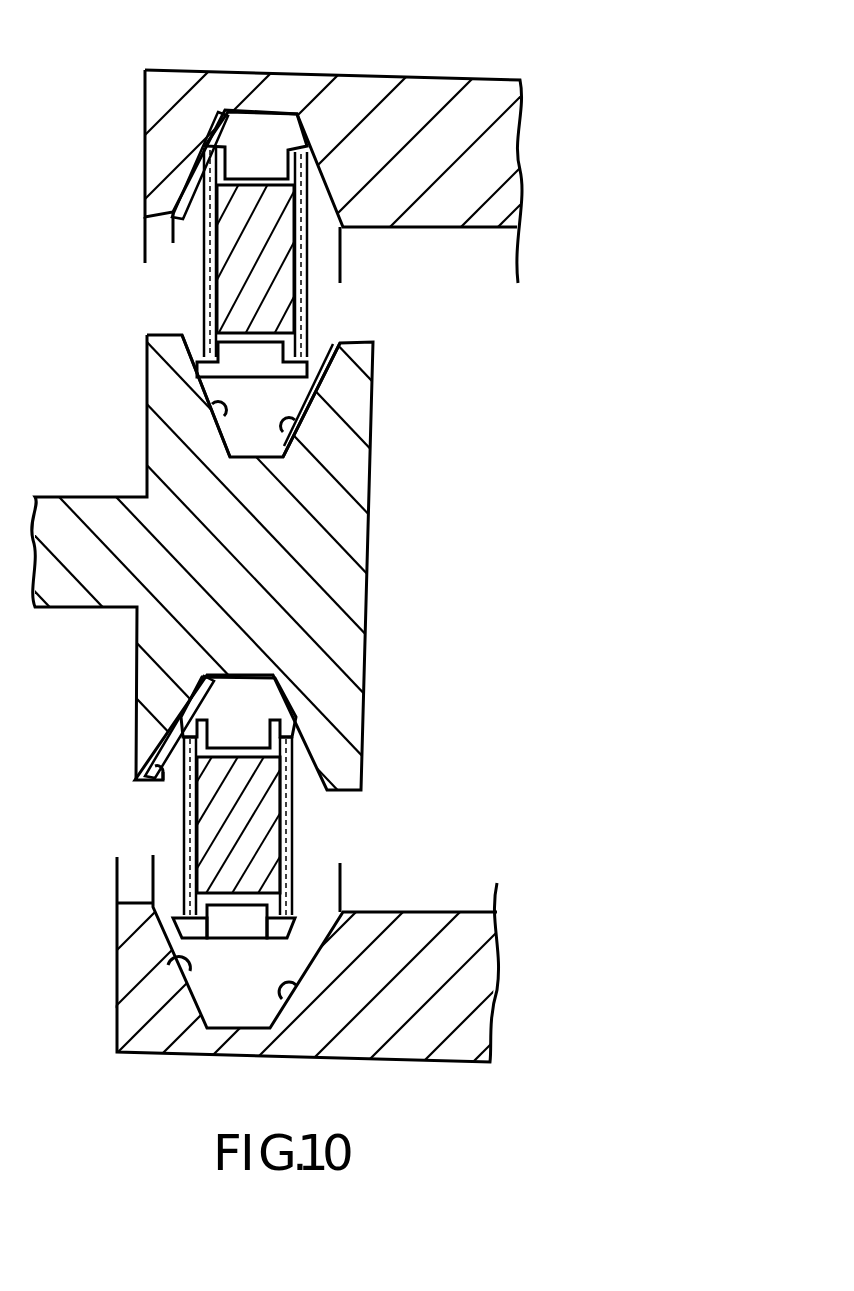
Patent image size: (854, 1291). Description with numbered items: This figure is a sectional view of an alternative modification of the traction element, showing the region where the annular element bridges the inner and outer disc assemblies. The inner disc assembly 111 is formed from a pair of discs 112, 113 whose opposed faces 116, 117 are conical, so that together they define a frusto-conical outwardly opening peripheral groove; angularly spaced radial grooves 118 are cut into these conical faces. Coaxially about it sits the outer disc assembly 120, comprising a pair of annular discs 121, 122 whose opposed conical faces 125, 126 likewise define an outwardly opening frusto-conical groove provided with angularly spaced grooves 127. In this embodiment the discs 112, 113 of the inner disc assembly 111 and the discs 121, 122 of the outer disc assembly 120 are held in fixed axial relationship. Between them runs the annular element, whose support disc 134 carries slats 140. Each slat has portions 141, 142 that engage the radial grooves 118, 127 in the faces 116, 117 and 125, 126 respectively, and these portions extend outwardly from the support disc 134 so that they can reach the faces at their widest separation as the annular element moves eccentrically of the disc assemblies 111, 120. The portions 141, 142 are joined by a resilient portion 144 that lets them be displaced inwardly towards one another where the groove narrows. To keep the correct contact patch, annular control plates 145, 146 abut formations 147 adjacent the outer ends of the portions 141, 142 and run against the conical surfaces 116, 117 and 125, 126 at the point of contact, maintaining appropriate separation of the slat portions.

The outer disc assembly 120 is at (413, 69).
The annular disc 121 is at (160, 150).
The annular disc 122 is at (430, 206).
The grooves 127 is at (172, 196).
The support disc 134 is at (232, 291).
The slats 140 is at (307, 332).
The inner disc assembly 111 is at (383, 546).
The disc 112 is at (156, 376).
The disc 113 is at (362, 402).
The conical face 116 is at (214, 406).
The conical face 117 is at (294, 428).
The radial grooves 118 is at (160, 795).
The slat portion 141 is at (185, 722).
The slat portion 142 is at (290, 727).
The formations 147 is at (190, 738).
The resilient portion 144 is at (247, 757).
The annular control plate 145 is at (184, 838).
The annular control plate 146 is at (290, 895).
The conical face 125 is at (180, 958).
The conical face 126 is at (279, 1005).